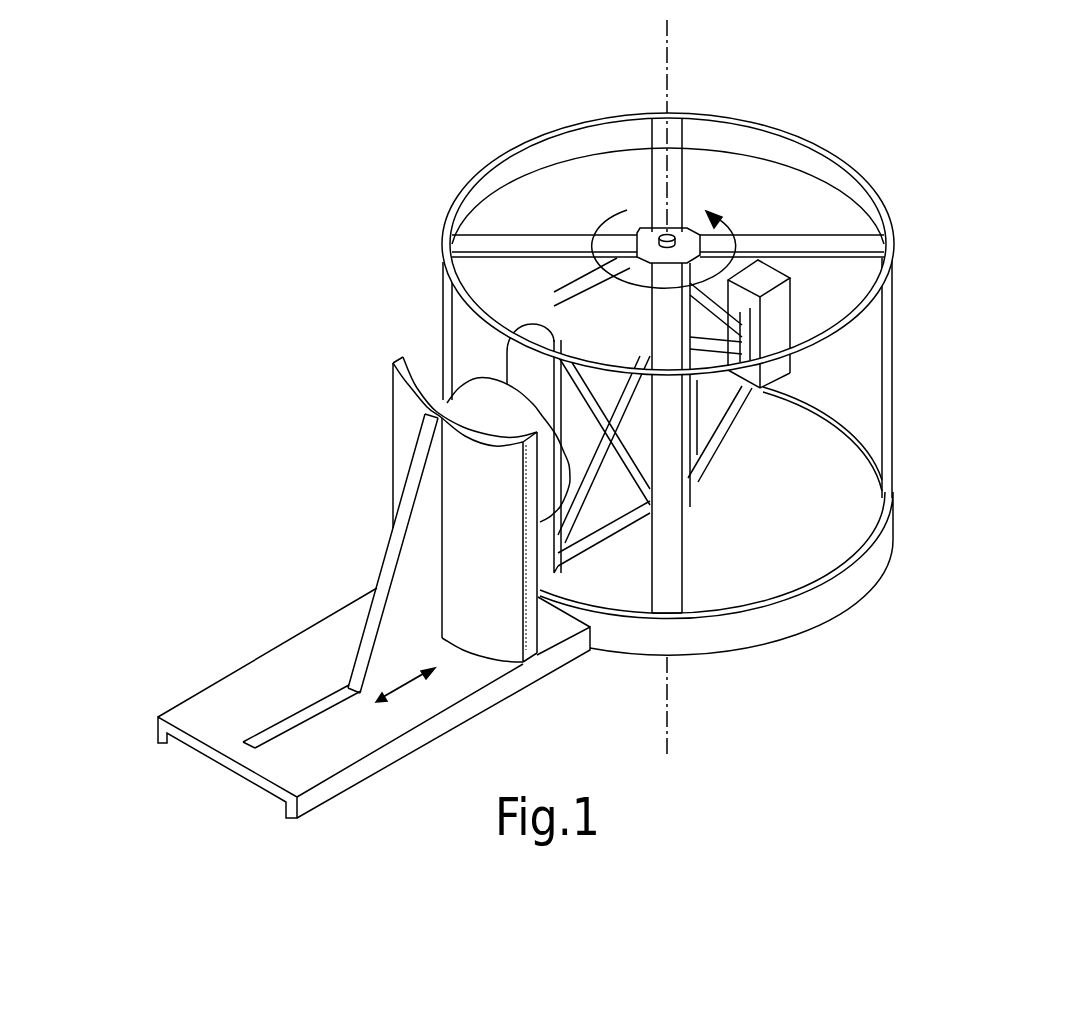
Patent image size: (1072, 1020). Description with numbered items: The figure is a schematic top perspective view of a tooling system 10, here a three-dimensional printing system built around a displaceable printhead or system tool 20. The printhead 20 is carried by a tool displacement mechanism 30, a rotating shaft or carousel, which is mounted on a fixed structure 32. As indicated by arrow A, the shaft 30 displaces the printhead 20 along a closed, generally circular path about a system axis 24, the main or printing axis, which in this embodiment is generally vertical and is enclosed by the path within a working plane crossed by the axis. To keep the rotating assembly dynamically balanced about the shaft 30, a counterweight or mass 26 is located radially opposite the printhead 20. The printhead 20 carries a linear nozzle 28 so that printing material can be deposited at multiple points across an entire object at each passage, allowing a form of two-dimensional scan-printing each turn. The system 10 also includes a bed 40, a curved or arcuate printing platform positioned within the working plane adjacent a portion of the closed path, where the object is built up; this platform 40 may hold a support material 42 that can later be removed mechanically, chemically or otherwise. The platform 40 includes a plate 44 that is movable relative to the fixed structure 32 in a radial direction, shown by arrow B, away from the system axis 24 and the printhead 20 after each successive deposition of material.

The tooling system 10 is at (952, 686).
The system tool 20 is at (540, 378).
The system axis 24 is at (667, 107).
The counterweight 26 is at (793, 313).
The linear nozzle 28 is at (463, 400).
The tool displacement mechanism 30 is at (672, 236).
The fixed structure 32 is at (312, 627).
The bed 40 is at (563, 438).
The support material 42 is at (513, 378).
The plate 44 is at (395, 437).
The arrow A is at (712, 216).
The arrow B is at (403, 687).